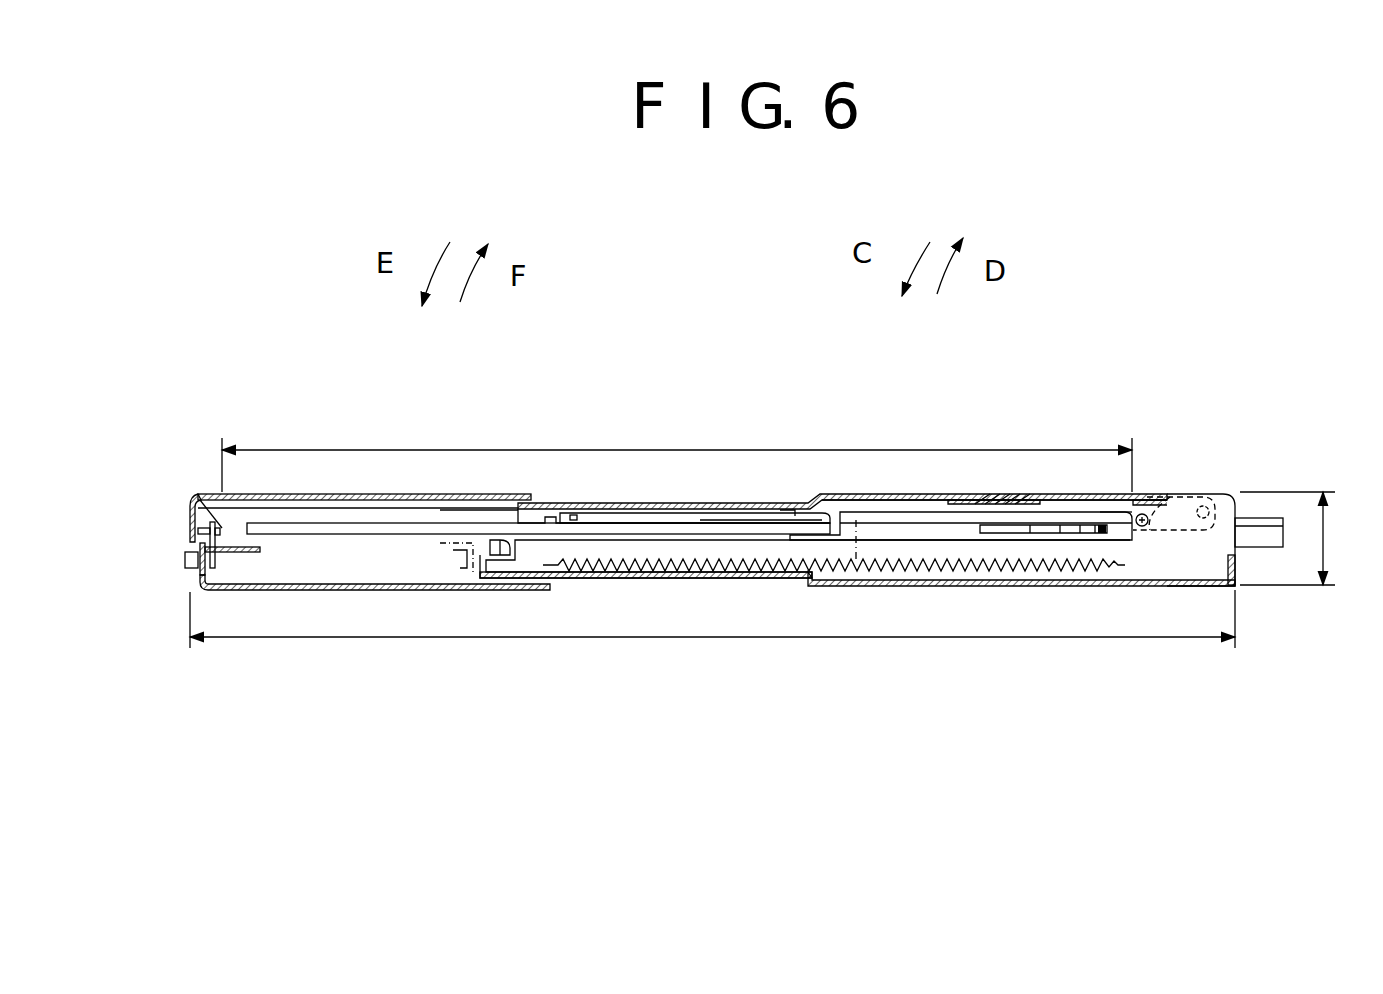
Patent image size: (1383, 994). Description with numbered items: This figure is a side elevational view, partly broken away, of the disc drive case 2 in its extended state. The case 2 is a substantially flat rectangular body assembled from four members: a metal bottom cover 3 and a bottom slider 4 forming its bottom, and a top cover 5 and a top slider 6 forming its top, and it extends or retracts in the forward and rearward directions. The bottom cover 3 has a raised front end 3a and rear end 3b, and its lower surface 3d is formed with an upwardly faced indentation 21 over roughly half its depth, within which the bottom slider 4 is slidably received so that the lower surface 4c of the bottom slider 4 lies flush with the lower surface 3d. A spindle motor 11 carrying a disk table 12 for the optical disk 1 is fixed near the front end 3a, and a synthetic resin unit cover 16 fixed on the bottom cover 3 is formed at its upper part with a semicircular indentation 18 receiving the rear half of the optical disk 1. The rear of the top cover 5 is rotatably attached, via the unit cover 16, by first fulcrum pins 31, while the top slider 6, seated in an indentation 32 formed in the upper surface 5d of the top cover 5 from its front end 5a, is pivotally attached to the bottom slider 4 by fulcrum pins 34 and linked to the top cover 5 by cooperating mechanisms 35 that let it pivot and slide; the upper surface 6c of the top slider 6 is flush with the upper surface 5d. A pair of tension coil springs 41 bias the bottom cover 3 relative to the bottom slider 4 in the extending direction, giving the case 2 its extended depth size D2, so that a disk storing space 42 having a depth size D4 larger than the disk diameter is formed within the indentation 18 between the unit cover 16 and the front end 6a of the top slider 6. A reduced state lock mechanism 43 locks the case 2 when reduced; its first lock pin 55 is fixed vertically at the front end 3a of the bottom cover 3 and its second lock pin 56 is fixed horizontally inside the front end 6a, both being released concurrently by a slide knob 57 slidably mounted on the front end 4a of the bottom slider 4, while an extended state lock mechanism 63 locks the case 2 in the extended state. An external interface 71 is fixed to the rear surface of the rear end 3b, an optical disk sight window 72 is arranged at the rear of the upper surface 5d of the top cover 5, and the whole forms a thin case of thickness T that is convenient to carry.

The optical disk 1 is at (313, 527).
The case 2 is at (1050, 410).
The bottom cover 3 is at (1055, 592).
The front end 3a is at (482, 590).
The rear end 3b is at (1236, 570).
The lower surface 3d is at (967, 587).
The bottom slider 4 is at (327, 592).
The front end 4a is at (218, 553).
The lower surface 4c is at (396, 591).
The top cover 5 is at (926, 490).
The front end 5a is at (546, 504).
The upper surface 5d is at (881, 494).
The top slider 6 is at (381, 490).
The front end 6a is at (190, 510).
The upper surface 6c is at (455, 494).
The spindle motor 11 is at (712, 533).
The disk table 12 is at (655, 518).
The unit cover 16 is at (1092, 545).
The indentation 18 is at (1112, 527).
The indentation 21 is at (712, 579).
The first fulcrum pins 31 is at (1203, 506).
The indentation 32 is at (786, 509).
The fulcrum pins 34 is at (1150, 520).
The cooperating mechanisms 35 is at (795, 508).
The tension coil springs 41 is at (860, 580).
The disk storing space 42 is at (232, 530).
The reduced state lock mechanism 43 is at (180, 550).
The first lock pin 55 is at (512, 558).
The second lock pin 56 is at (205, 531).
The slide knob 57 is at (190, 558).
The extended state lock mechanism 63 is at (456, 560).
The external interface 71 is at (1267, 520).
The optical disk sight window 72 is at (991, 498).
The depth size D2 is at (780, 638).
The depth size D4 is at (620, 449).
The thickness T is at (1332, 540).